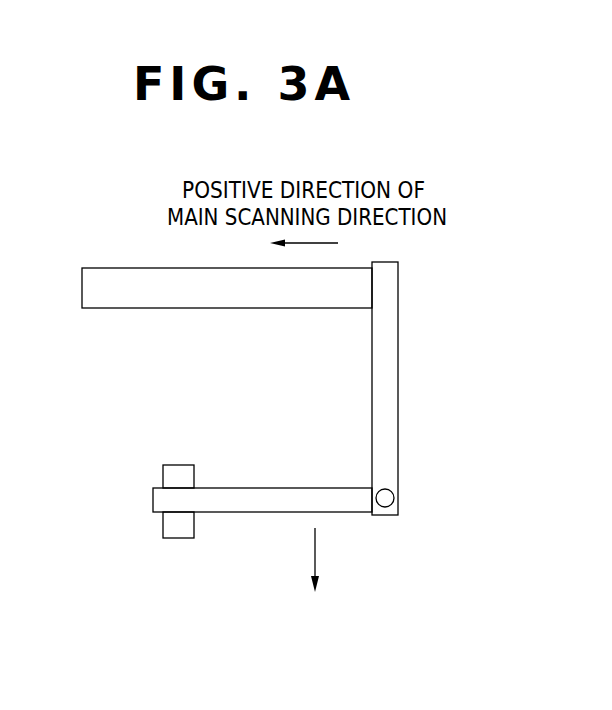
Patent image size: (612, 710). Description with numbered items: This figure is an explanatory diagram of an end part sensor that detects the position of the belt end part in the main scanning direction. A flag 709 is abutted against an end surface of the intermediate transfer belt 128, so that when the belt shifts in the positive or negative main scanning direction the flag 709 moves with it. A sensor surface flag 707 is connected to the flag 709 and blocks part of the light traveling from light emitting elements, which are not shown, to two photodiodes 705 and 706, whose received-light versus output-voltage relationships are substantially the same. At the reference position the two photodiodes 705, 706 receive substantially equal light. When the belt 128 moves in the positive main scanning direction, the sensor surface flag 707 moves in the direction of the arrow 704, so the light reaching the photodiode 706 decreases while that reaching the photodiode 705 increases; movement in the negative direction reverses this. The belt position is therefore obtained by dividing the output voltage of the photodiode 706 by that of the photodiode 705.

The intermediate transfer belt 128 is at (118, 273).
The arrow 704 is at (315, 557).
The photodiode 705 is at (180, 470).
The photodiode 706 is at (178, 538).
The sensor surface flag 707 is at (292, 495).
The flag 709 is at (388, 388).